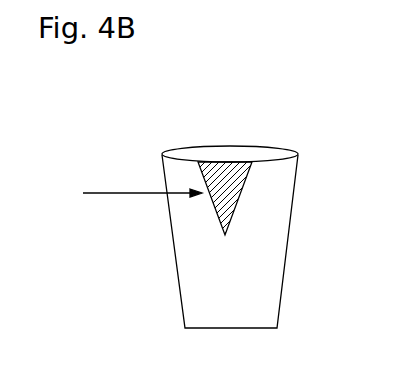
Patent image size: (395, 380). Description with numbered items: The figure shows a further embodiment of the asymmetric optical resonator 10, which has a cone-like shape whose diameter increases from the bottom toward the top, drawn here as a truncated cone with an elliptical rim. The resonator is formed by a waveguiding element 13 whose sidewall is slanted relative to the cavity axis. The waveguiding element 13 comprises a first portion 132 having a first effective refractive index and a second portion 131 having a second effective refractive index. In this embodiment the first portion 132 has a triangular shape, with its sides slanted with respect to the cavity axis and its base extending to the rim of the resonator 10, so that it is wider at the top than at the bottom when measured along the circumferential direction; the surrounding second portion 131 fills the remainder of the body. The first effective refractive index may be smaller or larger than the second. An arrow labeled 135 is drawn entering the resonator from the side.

The resonator 10 is at (273, 155).
The waveguiding element 13 is at (196, 155).
The second portion 131 is at (265, 258).
The first portion 132 is at (224, 162).
The incident light 135 is at (128, 193).